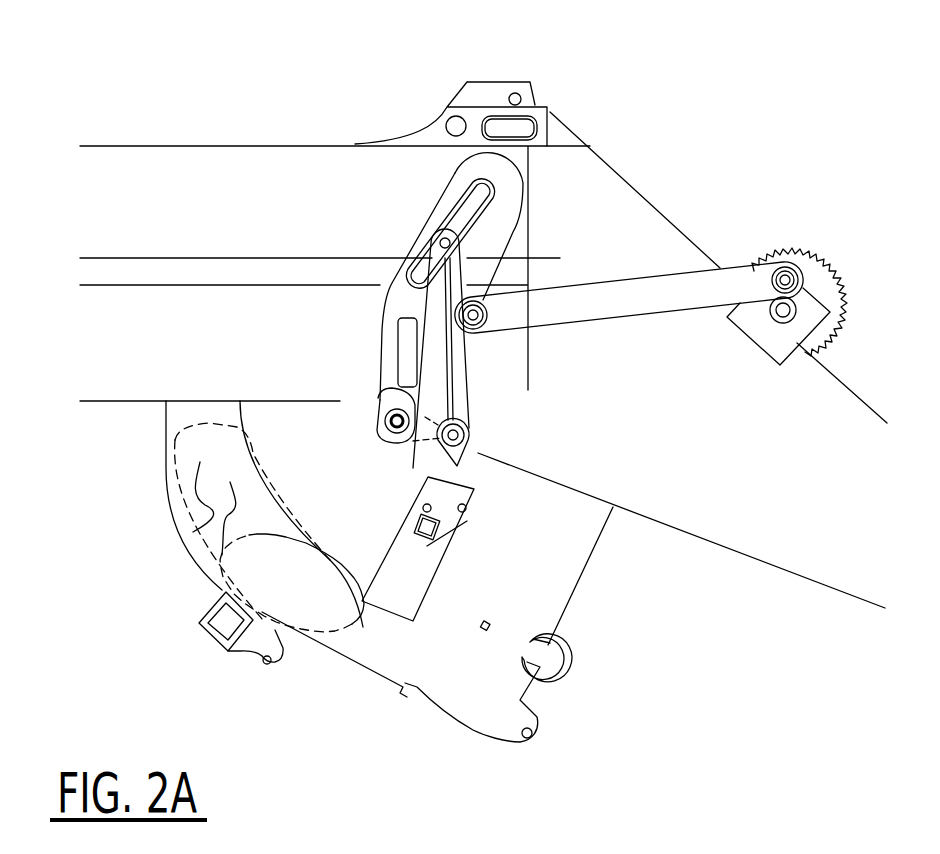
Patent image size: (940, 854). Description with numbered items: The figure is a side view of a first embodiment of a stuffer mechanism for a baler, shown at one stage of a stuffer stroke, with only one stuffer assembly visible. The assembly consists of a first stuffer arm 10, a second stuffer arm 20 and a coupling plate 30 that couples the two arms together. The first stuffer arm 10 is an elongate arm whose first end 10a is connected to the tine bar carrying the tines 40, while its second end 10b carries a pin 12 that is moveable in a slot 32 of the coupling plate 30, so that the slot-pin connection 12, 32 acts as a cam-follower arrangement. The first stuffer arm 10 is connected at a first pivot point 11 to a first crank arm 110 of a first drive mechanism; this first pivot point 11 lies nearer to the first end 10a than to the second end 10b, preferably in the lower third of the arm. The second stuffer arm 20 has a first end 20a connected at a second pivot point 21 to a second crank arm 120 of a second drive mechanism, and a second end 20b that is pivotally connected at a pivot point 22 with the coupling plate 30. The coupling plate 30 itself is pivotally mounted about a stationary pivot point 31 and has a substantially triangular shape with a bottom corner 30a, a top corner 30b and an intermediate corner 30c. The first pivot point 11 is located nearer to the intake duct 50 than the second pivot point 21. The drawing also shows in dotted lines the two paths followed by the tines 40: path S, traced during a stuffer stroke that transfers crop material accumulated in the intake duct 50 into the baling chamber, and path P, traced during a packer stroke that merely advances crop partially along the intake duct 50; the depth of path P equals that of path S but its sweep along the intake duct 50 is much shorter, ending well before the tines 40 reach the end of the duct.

The first stuffer arm 10 is at (429, 322).
The first end of first stuffer arm 10a is at (380, 491).
The second end of first stuffer arm 10b is at (487, 251).
The first pivot point 11 is at (470, 447).
The pin 12 is at (437, 243).
The second stuffer arm 20 is at (649, 253).
The first end of second stuffer arm 20a is at (762, 240).
The second end of second stuffer arm 20b is at (520, 306).
The second pivot point 21 is at (795, 277).
The pivot point 22 is at (470, 305).
The coupling plate 30 is at (503, 244).
The bottom corner 30a is at (342, 397).
The top corner 30b is at (545, 132).
The intermediate corner 30c is at (357, 285).
The stationary pivot point 31 is at (392, 401).
The slot 32 is at (467, 200).
The tines 40 is at (392, 567).
The intake duct 50 is at (308, 672).
The first crank arm 110 is at (410, 405).
The second crank arm 120 is at (828, 282).
The stuffer stroke path S is at (252, 521).
The packer stroke path P is at (292, 545).